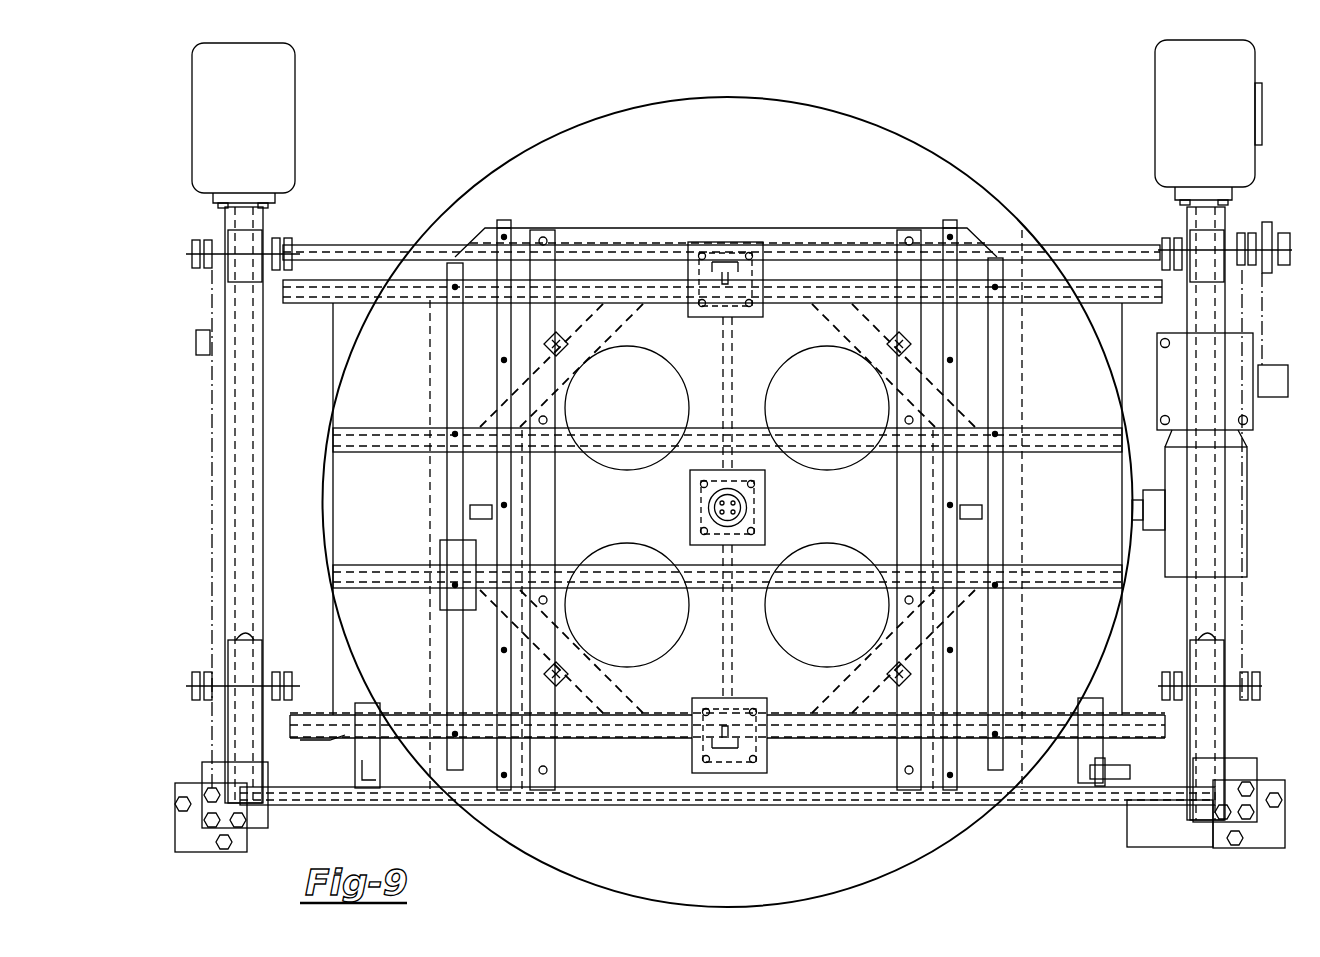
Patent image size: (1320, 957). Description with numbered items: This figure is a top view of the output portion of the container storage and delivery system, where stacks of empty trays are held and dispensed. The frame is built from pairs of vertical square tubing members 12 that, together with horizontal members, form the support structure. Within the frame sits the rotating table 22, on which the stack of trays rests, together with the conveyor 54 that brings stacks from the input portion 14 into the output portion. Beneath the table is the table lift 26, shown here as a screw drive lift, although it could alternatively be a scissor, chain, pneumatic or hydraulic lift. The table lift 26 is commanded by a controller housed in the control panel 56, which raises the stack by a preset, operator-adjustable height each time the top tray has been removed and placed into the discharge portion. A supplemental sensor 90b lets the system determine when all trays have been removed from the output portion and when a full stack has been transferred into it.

The vertical square tubing member 12 is at (1163, 117).
The input portion 14 is at (247, 510).
The rotatable table 22 is at (760, 522).
The table lift 26 is at (1248, 410).
The conveyor 54 is at (960, 687).
The control panel 56 is at (1175, 843).
The supplemental sensor 90b is at (1120, 775).